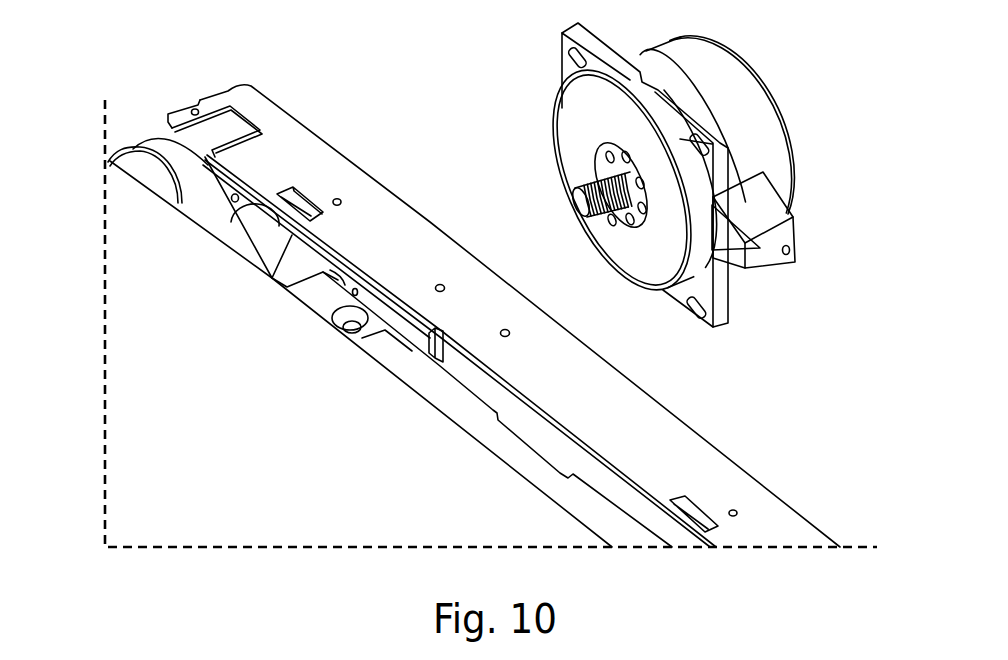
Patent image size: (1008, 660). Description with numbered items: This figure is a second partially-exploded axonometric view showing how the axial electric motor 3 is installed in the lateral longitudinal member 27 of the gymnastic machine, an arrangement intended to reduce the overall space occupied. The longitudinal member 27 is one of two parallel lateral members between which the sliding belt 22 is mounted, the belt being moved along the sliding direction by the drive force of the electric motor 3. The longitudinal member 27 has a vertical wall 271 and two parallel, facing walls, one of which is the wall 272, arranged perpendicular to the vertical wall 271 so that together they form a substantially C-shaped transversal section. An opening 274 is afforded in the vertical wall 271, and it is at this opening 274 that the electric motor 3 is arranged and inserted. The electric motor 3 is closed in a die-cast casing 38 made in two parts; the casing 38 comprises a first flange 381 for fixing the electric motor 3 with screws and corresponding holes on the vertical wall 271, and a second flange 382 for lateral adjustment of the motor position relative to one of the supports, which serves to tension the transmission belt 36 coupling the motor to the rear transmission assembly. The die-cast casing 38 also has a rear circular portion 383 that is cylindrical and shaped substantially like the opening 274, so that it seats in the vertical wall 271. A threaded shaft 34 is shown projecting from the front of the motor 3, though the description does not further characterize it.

The axial electric motor 3 is at (681, 169).
The sliding belt 22 is at (145, 292).
The lateral longitudinal member 27 is at (474, 288).
The threaded shaft 34 is at (588, 213).
The transmission belt 36 is at (145, 146).
The die-cast casing 38 is at (753, 88).
The vertical wall 271 is at (533, 435).
The wall 272 is at (308, 153).
The opening 274 is at (274, 232).
The first flange 381 is at (588, 32).
The second flange 382 is at (797, 244).
The rear circular portion 383 is at (562, 92).